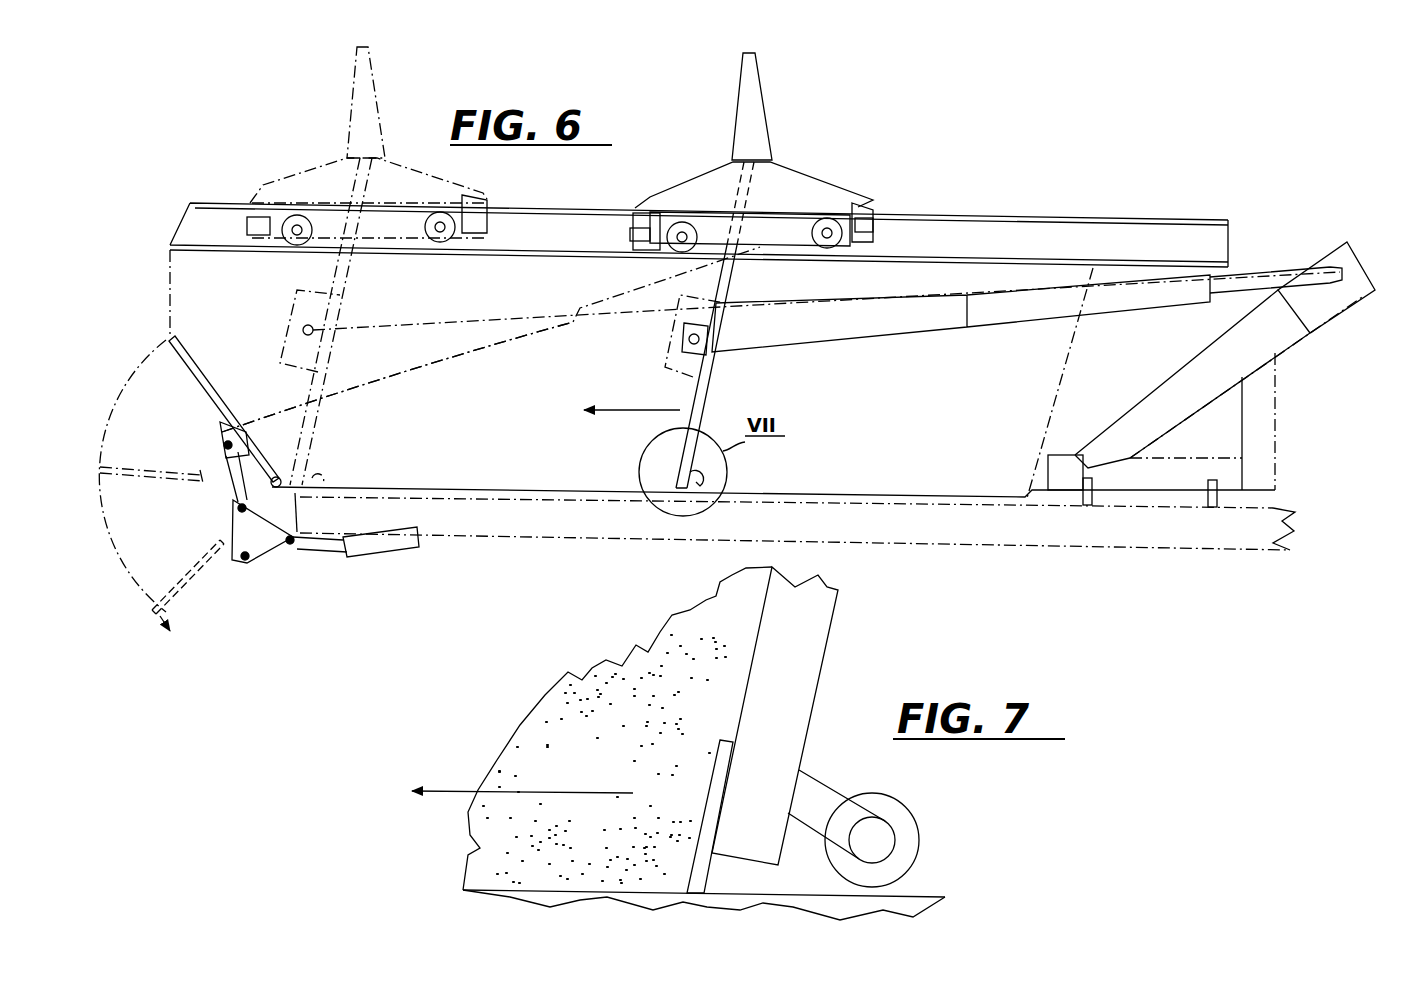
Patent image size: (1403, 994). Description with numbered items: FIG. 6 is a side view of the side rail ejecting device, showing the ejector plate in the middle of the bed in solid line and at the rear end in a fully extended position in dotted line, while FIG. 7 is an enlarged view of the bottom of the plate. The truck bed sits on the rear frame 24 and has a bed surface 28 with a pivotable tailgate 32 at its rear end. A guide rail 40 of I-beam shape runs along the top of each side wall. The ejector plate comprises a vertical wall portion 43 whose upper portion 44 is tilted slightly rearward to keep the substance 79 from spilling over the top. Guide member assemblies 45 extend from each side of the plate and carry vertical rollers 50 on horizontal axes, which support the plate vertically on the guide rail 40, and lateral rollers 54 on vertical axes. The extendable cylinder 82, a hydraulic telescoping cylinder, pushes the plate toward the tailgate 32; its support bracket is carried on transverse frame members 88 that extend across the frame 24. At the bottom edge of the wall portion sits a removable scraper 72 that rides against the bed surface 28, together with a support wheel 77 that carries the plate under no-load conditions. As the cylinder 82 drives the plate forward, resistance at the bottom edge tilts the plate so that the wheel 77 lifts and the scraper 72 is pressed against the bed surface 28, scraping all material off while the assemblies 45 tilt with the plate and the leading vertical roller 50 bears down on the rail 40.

In FIG. 6, the rear frame 24 is at (1282, 495).
In FIG. 6, the bed surface 28 is at (843, 490).
In FIG. 7, the bed surface 28 is at (923, 893).
In FIG. 6, the tailgate 32 is at (205, 368).
In FIG. 6, the guide rail 40 is at (1067, 217).
In FIG. 6, the vertical wall portion 43 is at (696, 393).
In FIG. 7, the vertical wall portion 43 is at (795, 655).
In FIG. 6, the upper portion 44 is at (766, 98).
In FIG. 6, the guide member assembly 45 is at (814, 169).
In FIG. 6, the vertical roller 50 is at (833, 250).
In FIG. 6, the lateral roller 54 is at (873, 227).
In FIG. 7, the scraper 72 is at (712, 815).
In FIG. 7, the support wheel 77 is at (907, 823).
In FIG. 6, the substance 79 is at (451, 358).
In FIG. 7, the substance 79 is at (553, 753).
In FIG. 6, the extendable cylinder 82 is at (935, 325).
In FIG. 6, the transverse frame member 88 is at (1217, 497).